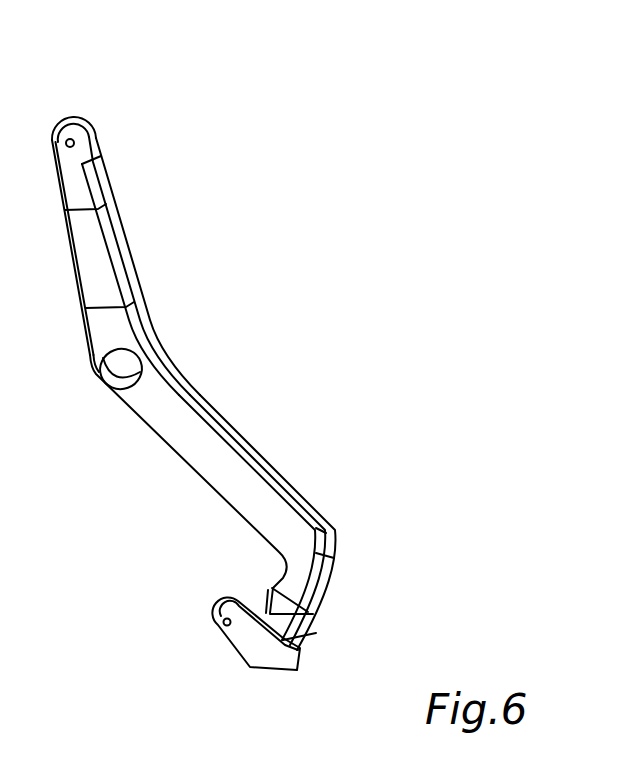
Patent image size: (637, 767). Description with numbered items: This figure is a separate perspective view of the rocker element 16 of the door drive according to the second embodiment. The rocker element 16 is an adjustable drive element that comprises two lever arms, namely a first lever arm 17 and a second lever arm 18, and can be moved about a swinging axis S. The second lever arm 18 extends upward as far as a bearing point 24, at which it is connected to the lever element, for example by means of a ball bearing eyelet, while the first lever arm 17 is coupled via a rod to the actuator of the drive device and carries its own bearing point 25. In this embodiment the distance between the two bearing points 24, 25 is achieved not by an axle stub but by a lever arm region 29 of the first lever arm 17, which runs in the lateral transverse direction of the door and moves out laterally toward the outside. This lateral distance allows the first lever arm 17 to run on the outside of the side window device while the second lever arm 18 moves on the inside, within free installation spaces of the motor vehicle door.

The rocker element 16 is at (325, 193).
The first lever arm 17 is at (280, 471).
The second lever arm 18 is at (101, 158).
The bearing point 24 is at (70, 139).
The bearing point 25 is at (224, 626).
The lever arm region 29 is at (320, 620).
The swinging axis S is at (99, 380).